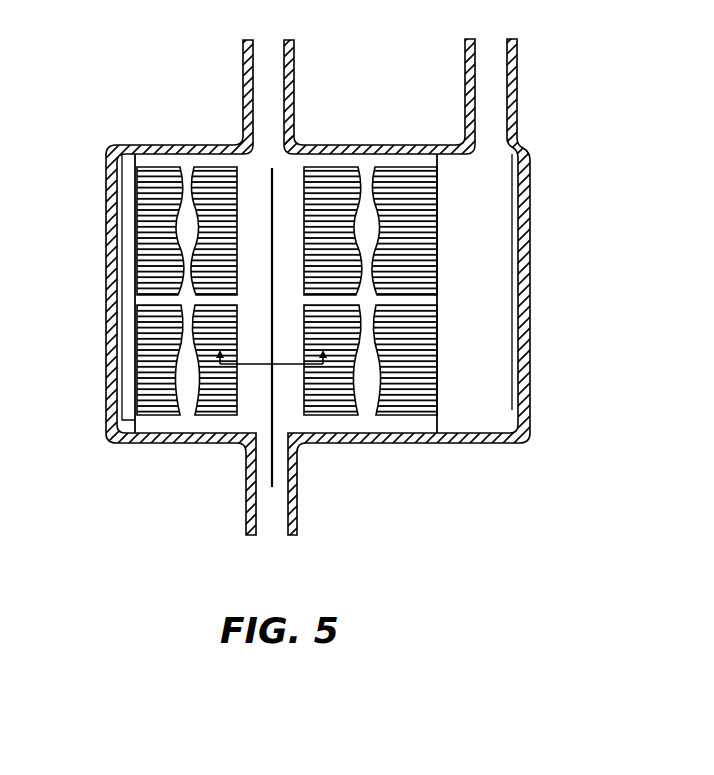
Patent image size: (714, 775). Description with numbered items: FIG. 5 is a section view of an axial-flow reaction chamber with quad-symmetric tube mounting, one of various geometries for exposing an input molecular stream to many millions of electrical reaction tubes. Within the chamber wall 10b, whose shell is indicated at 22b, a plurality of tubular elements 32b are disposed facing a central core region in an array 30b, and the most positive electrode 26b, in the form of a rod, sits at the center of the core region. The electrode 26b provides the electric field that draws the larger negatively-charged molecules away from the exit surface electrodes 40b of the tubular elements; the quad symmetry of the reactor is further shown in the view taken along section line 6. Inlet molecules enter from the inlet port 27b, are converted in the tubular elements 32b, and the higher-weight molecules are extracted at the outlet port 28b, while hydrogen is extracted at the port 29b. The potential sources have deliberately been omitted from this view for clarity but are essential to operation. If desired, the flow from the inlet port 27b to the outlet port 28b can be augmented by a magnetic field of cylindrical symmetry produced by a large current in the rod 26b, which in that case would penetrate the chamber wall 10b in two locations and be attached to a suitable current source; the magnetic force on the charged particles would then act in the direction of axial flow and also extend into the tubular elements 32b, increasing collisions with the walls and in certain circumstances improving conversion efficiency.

The chamber wall 10b is at (328, 287).
The housing wall 22b is at (106, 218).
The most positive electrode 26b is at (274, 468).
The inlet port 27b is at (270, 50).
The outlet port 28b is at (272, 524).
The port 29b is at (496, 52).
The array 30b is at (210, 167).
The tubular elements 32b is at (413, 184).
The exit surface electrodes 40b is at (237, 417).
The section line for FIG. 6 is at (223, 360).